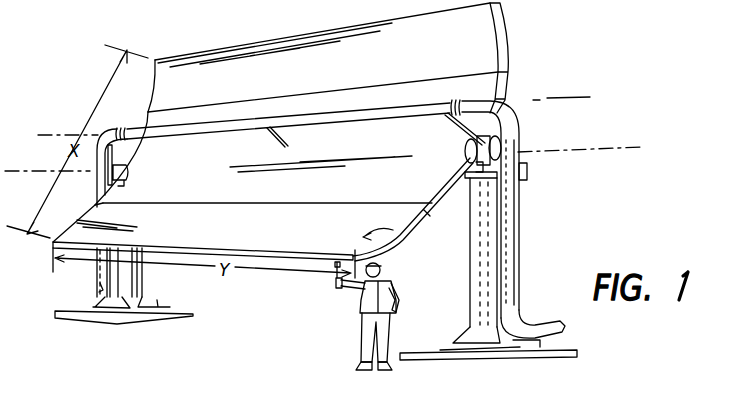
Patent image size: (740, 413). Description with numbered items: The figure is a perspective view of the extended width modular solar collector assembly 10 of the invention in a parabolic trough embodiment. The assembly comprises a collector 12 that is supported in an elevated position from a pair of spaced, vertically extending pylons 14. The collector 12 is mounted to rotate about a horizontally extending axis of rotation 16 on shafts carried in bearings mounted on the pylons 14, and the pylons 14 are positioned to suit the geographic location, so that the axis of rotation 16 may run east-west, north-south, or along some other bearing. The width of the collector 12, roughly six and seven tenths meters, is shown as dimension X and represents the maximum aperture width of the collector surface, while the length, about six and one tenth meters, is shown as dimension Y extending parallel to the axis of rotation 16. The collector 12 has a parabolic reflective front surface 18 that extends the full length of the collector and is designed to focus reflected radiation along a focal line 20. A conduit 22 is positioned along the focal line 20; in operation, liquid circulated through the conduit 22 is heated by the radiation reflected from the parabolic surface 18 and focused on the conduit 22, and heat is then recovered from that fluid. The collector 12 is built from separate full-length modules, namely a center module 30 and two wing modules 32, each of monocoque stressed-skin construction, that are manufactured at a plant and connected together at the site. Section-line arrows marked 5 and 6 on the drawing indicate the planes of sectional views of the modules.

The solar collector assembly 10 is at (338, 132).
The collector 12 is at (508, 74).
The pylons 14 is at (522, 212).
The axis of rotation 16 is at (608, 147).
The parabolic reflective surface 18 is at (396, 234).
The focal line 20 is at (577, 93).
The conduit 22 is at (407, 112).
The center module 30 is at (210, 177).
The wing modules 32 is at (261, 81).
The section line 5 is at (513, 107).
The section line 6 is at (405, 103).